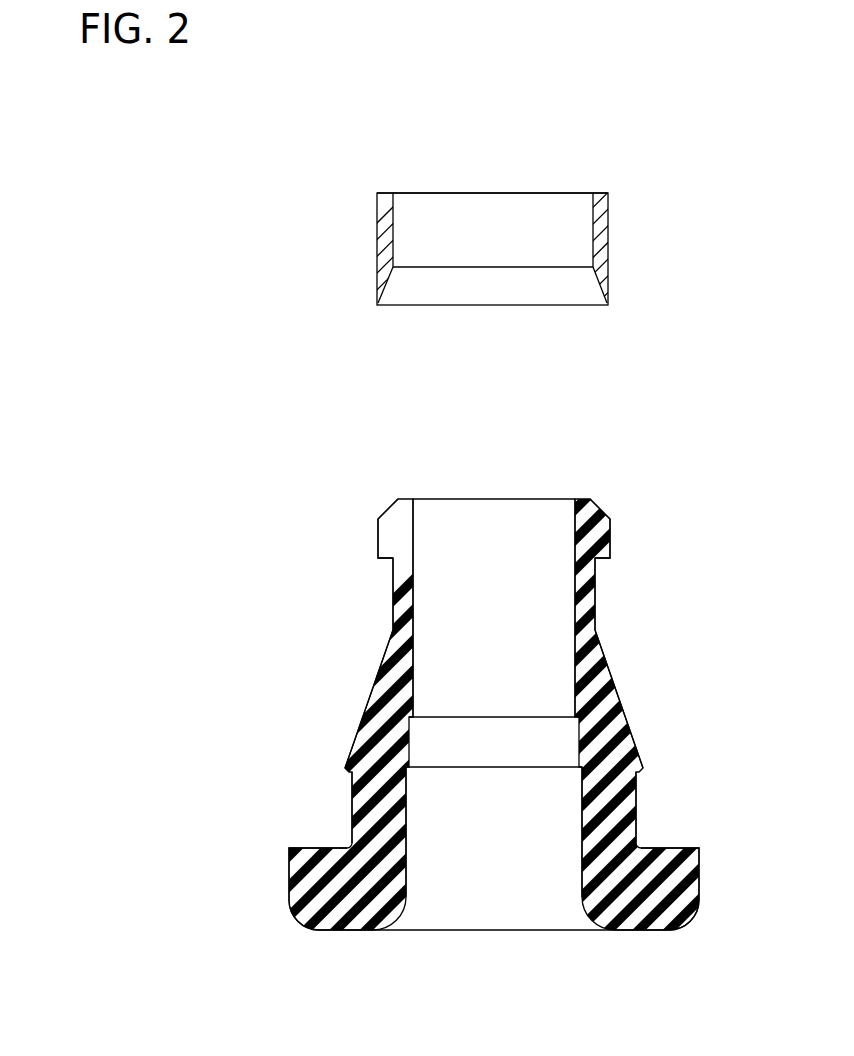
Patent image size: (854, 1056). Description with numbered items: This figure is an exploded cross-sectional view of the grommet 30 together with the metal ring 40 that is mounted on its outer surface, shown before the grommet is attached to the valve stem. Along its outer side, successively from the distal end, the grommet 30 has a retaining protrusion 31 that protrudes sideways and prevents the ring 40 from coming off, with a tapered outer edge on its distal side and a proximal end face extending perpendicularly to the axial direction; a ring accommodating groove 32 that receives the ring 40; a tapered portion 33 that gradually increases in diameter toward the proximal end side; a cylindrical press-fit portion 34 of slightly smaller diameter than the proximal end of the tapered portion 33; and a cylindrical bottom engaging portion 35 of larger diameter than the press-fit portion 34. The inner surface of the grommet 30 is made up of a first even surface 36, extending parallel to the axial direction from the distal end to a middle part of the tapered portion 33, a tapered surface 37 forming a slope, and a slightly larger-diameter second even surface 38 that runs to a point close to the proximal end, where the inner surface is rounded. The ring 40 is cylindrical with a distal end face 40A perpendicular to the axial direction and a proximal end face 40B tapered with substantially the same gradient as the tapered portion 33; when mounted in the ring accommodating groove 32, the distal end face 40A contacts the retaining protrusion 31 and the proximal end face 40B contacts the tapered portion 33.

The grommet 30 is at (597, 508).
The retaining protrusion 31 is at (605, 540).
The ring accommodating groove 32 is at (595, 582).
The tapered portion 33 is at (620, 687).
The press-fit portion 34 is at (636, 803).
The bottom engaging portion 35 is at (700, 873).
The first even surface 36 is at (413, 547).
The tapered surface 37 is at (410, 735).
The second even surface 38 is at (408, 842).
The ring 40 is at (608, 245).
The distal end face 40A is at (608, 196).
The proximal end face 40B is at (595, 286).